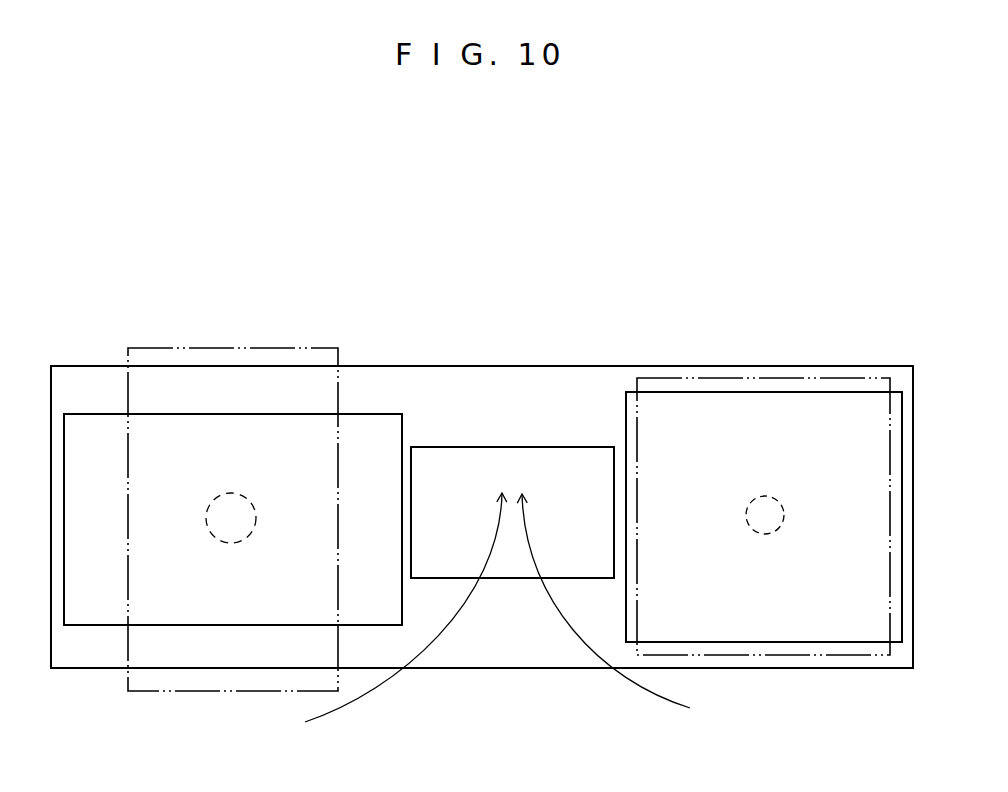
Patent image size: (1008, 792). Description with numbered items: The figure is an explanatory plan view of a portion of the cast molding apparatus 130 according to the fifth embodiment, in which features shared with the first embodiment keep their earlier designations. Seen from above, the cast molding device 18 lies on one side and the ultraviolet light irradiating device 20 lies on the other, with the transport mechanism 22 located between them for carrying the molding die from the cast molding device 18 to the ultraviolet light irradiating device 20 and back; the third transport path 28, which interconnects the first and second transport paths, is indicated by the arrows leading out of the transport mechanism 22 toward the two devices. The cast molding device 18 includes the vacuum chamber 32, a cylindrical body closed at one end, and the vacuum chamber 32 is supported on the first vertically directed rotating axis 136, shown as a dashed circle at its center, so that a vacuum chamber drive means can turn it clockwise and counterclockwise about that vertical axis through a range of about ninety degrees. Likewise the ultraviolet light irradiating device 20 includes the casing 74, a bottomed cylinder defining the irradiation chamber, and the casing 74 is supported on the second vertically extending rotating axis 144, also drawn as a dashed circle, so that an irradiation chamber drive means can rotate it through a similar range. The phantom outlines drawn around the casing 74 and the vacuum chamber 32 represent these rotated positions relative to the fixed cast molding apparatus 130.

The cast molding apparatus 130 is at (723, 157).
The cast molding device 18 is at (709, 262).
The ultraviolet light irradiating device 20 is at (116, 326).
The casing 74 is at (368, 423).
The second rotating axis 144 is at (235, 547).
The transport mechanism 22 is at (534, 424).
The third transport path 28 is at (510, 588).
The vacuum chamber 32 is at (817, 402).
The first rotating axis 136 is at (767, 533).